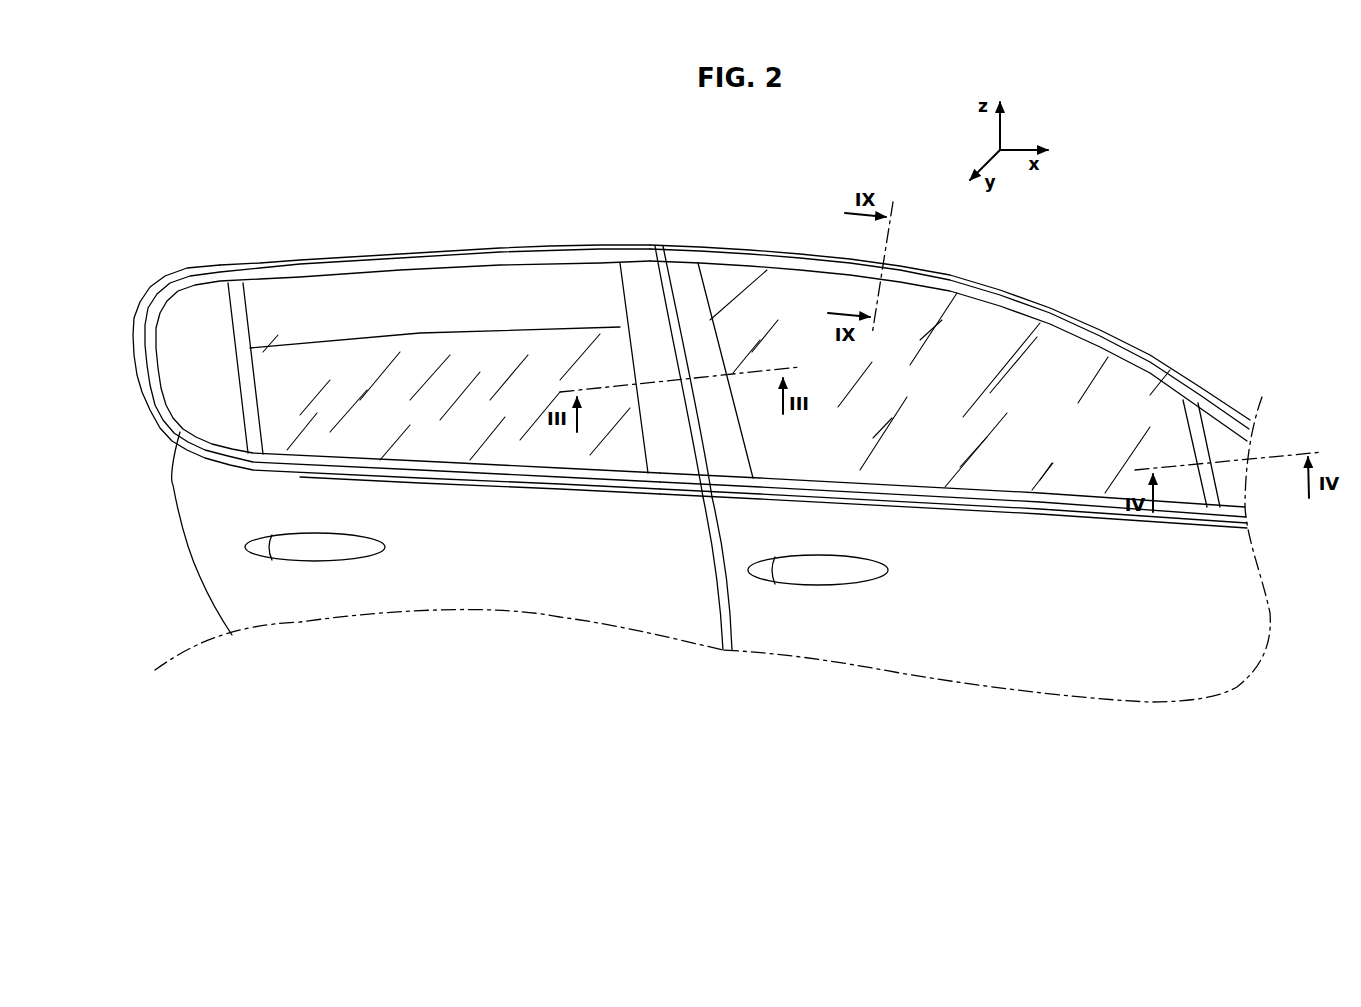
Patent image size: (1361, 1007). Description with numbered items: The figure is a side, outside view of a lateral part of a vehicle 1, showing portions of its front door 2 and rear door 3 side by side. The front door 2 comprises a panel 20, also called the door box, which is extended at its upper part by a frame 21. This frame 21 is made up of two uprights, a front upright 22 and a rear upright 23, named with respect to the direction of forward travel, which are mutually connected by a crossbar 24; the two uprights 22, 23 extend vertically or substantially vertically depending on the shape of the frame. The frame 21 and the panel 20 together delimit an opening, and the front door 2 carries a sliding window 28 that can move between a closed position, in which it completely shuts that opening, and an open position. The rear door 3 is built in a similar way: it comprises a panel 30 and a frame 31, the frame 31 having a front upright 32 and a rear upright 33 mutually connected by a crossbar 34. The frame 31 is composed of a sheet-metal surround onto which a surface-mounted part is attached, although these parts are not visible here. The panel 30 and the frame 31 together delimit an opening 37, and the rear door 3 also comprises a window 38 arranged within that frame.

The vehicle 1 is at (558, 188).
The front door 2 is at (968, 719).
The rear door 3 is at (495, 667).
The panel 20 is at (929, 561).
The frame 21 is at (1067, 297).
The front upright 22 is at (1200, 430).
The rear upright 23 is at (692, 297).
The crossbar 24 is at (1005, 290).
The sliding window 28 is at (929, 399).
The panel 30 is at (429, 561).
The frame 31 is at (347, 235).
The front upright 32 is at (650, 297).
The rear upright 33 is at (237, 317).
The crossbar 34 is at (421, 253).
The opening 37 is at (431, 309).
The window 38 is at (431, 399).